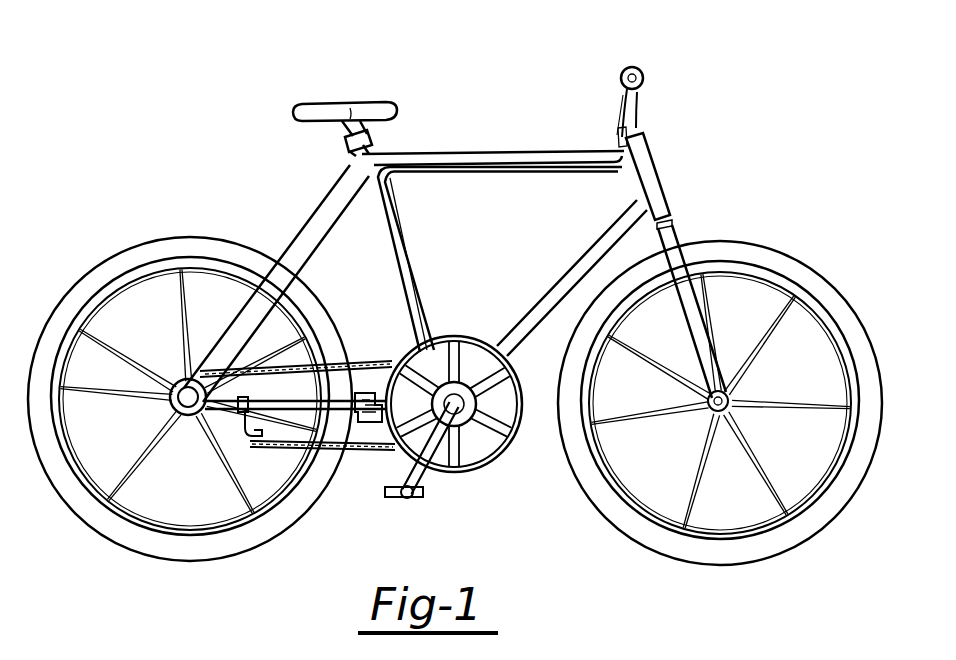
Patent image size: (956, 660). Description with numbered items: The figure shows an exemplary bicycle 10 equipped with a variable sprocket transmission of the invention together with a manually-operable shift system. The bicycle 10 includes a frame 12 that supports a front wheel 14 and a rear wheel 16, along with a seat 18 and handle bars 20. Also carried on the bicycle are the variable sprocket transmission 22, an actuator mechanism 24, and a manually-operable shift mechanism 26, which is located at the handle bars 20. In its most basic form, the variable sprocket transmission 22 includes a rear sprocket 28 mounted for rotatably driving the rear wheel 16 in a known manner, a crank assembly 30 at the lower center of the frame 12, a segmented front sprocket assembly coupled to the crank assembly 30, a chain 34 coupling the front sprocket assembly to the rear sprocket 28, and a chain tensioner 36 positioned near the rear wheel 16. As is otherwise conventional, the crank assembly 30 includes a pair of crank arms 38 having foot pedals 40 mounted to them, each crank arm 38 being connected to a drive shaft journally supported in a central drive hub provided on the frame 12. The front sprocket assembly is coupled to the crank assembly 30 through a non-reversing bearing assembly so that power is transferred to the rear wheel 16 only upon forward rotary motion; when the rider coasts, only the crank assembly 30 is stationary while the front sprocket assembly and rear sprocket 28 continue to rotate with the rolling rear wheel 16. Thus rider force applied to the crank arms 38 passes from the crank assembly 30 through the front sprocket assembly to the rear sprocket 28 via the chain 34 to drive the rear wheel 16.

The bicycle 10 is at (498, 104).
The frame 12 is at (456, 156).
The front wheel 14 is at (755, 245).
The rear wheel 16 is at (262, 257).
The seat 18 is at (380, 100).
The handle bars 20 is at (616, 110).
The variable sprocket transmission 22 is at (459, 391).
The actuator mechanism 24 is at (371, 422).
The manually-operable shift mechanism 26 is at (645, 78).
The rear sprocket 28 is at (184, 418).
The crank assembly 30 is at (490, 456).
The chain 34 is at (353, 367).
The chain tensioner 36 is at (246, 440).
The crank arms 38 is at (432, 456).
The foot pedals 40 is at (392, 497).